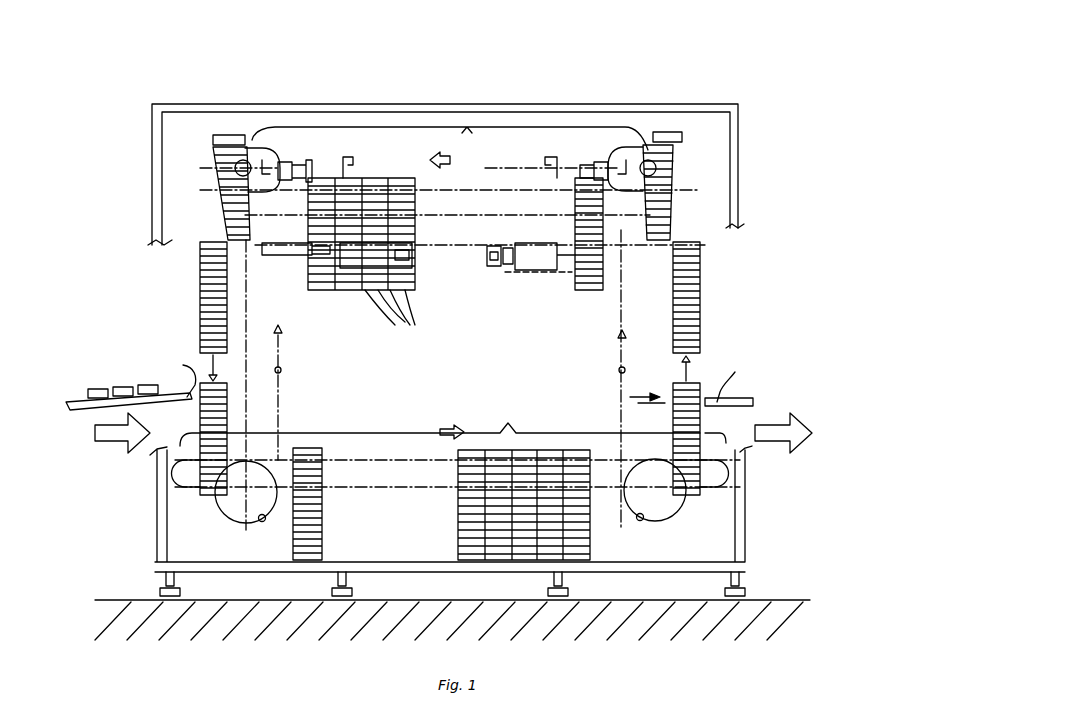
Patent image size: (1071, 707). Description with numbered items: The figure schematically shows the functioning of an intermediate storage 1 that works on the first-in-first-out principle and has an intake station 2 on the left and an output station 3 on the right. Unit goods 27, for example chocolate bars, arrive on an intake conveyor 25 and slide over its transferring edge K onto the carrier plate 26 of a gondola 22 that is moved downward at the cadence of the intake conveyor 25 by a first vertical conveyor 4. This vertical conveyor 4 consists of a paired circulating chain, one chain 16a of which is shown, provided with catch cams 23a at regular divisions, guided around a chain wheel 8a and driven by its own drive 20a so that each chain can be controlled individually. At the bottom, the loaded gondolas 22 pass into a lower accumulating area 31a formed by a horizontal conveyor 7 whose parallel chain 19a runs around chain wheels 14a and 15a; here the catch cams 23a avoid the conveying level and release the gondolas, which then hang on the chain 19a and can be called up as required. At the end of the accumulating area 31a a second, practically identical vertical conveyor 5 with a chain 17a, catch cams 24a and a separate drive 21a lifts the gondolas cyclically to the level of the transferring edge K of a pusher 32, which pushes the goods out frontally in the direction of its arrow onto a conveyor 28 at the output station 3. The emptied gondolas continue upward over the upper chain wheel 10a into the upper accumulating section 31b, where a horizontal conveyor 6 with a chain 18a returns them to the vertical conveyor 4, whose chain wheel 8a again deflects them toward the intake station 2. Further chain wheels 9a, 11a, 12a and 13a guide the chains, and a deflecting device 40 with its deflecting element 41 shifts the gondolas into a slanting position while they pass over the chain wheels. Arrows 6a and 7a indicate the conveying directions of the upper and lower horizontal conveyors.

The intermediate storage 1 is at (338, 68).
The intake station 2 is at (123, 377).
The output station 3 is at (721, 384).
The vertical conveyor 4 is at (284, 174).
The vertical conveyor 5 is at (663, 177).
The horizontal conveyor 6 is at (440, 224).
The upper transport direction 6a is at (463, 188).
The horizontal conveyor 7 is at (403, 507).
The lower transport direction 7a is at (408, 458).
The chain wheel 8a is at (258, 135).
The chain wheel 9a is at (230, 522).
The chain wheel 10a is at (646, 160).
The chain wheel 11a is at (665, 522).
The chain wheel 12a is at (258, 225).
The chain wheel 13a is at (633, 222).
The chain wheel 14a is at (182, 485).
The chain wheel 15a is at (703, 472).
The chain 16a is at (288, 412).
The chain 17a is at (620, 412).
The chain 18a is at (507, 188).
The chain 19a is at (380, 465).
The drive 20a is at (315, 152).
The drive 21a is at (573, 168).
The gondola 22 is at (395, 314).
The catch cam 23a is at (288, 370).
The catch cam 24a is at (620, 357).
The intake conveyor 25 is at (92, 410).
The carrier plate 26 is at (205, 305).
The unit goods 27 is at (118, 385).
The conveyor 28 is at (748, 395).
The lower accumulating area 31a is at (453, 421).
The upper accumulating section 31b is at (450, 133).
The pusher 32 is at (647, 373).
The deflecting device 40 is at (540, 276).
The deflecting element 41 is at (670, 235).
The transferring edge K is at (459, 372).